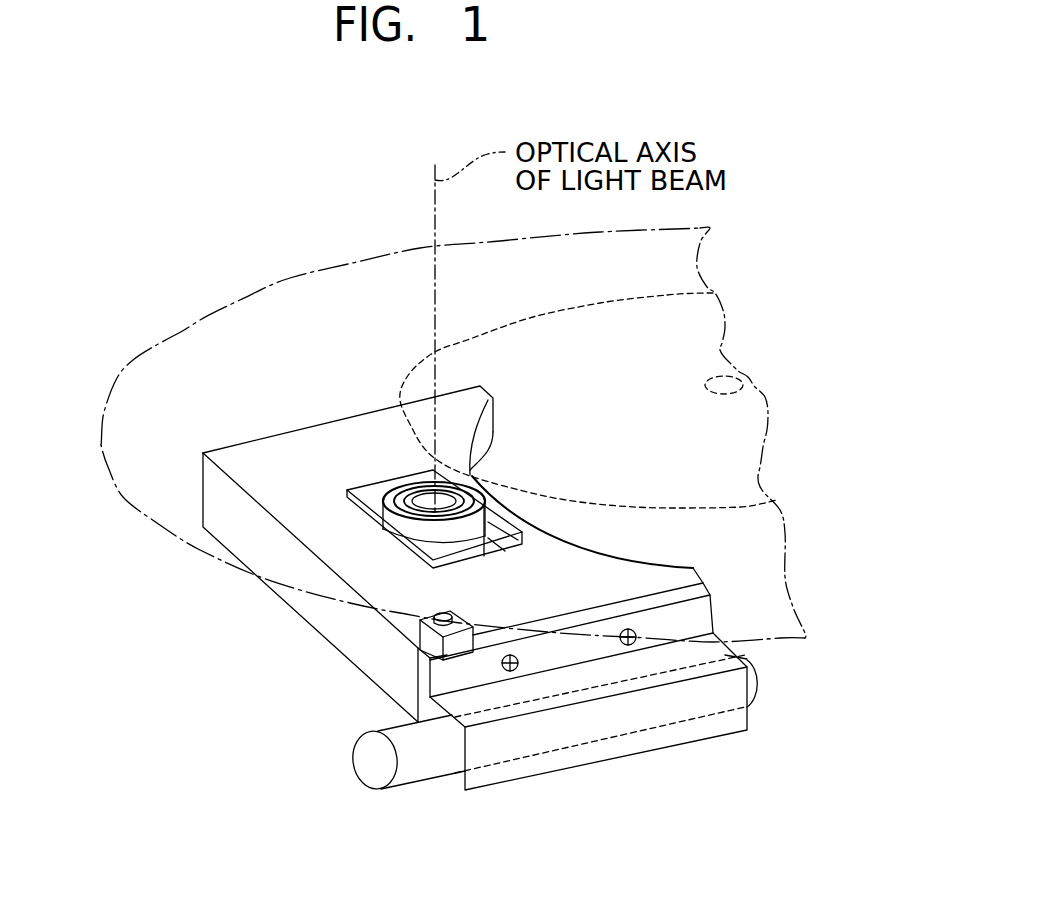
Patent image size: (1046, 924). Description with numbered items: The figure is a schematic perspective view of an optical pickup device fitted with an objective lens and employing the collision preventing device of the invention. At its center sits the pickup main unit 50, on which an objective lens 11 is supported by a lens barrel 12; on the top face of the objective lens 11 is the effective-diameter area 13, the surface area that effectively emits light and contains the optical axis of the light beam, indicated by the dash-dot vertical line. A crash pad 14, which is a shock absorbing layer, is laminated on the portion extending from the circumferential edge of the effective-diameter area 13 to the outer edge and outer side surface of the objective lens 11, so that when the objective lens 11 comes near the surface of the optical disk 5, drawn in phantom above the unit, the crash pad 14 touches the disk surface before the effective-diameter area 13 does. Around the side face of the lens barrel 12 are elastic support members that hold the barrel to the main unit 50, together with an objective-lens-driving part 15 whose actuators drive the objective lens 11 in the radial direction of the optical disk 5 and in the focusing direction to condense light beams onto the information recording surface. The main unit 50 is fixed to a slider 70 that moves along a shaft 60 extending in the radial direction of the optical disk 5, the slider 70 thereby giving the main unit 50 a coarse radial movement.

The optical disk 5 is at (167, 363).
The objective lens 11 is at (443, 503).
The lens barrel 12 is at (397, 497).
The effective-diameter area 13 is at (425, 503).
The crash pad 14 is at (480, 498).
The objective-lens-driving part 15 is at (407, 537).
The pickup main unit 50 is at (627, 562).
The shaft 60 is at (373, 772).
The slider 70 is at (660, 738).